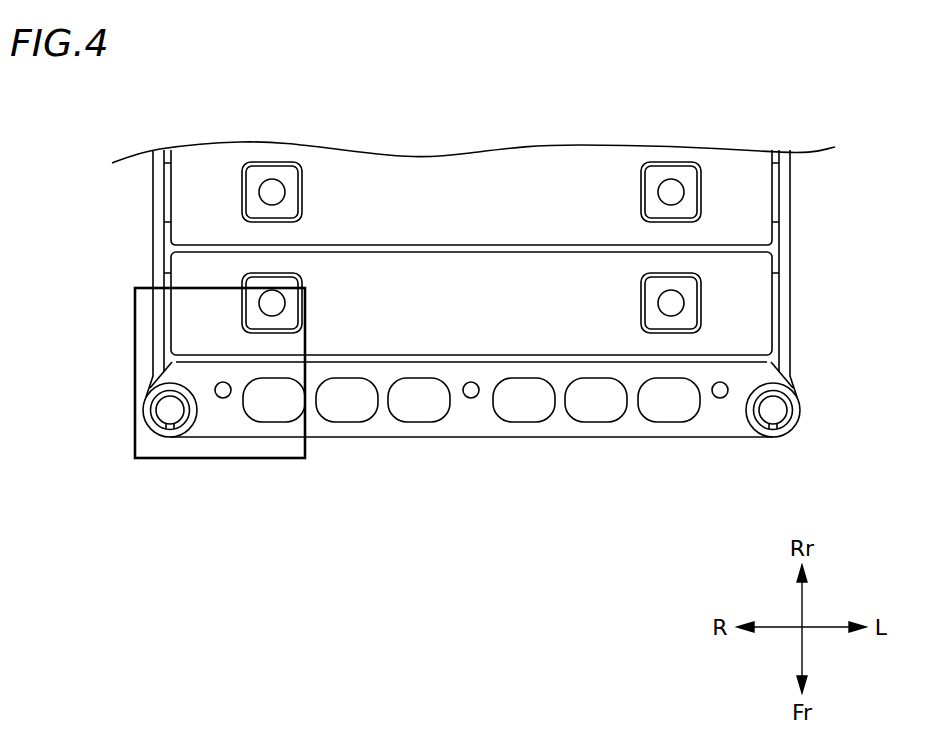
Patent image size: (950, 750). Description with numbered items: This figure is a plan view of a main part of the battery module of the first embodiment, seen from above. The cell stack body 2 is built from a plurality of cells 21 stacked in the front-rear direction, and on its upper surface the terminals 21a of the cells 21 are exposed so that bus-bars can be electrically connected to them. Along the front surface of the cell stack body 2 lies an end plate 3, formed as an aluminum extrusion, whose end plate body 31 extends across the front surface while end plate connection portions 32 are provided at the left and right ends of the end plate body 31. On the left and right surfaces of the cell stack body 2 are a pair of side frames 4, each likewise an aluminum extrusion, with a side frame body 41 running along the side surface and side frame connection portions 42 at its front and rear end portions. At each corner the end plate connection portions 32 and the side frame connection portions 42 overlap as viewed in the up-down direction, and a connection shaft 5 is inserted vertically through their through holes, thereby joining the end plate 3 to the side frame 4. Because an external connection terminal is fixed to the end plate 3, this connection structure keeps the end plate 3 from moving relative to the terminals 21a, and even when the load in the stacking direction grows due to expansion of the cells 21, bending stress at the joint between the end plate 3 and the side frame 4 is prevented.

The cell stack body 2 is at (460, 179).
The cell 21 is at (537, 309).
The terminal 21a is at (673, 302).
The end plate 3 is at (471, 446).
The end plate body 31 is at (481, 440).
The end plate connection portion 32 is at (147, 394).
The side frame 4 is at (791, 257).
The side frame body 41 is at (153, 190).
The side frame connection portion 42 is at (799, 393).
The connection shaft 5 is at (170, 410).